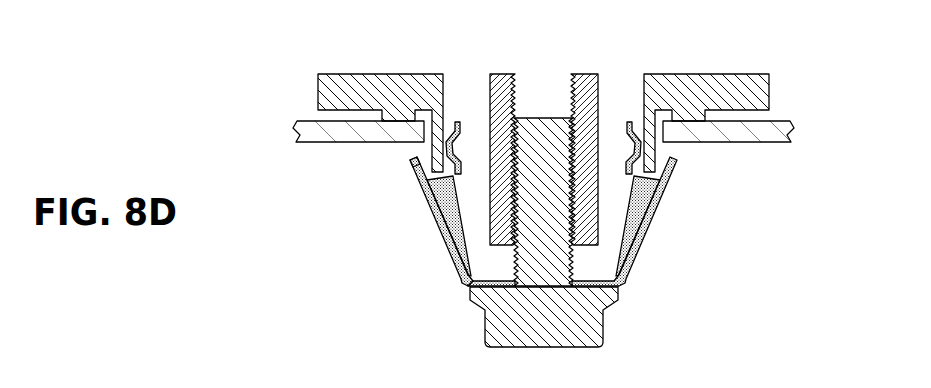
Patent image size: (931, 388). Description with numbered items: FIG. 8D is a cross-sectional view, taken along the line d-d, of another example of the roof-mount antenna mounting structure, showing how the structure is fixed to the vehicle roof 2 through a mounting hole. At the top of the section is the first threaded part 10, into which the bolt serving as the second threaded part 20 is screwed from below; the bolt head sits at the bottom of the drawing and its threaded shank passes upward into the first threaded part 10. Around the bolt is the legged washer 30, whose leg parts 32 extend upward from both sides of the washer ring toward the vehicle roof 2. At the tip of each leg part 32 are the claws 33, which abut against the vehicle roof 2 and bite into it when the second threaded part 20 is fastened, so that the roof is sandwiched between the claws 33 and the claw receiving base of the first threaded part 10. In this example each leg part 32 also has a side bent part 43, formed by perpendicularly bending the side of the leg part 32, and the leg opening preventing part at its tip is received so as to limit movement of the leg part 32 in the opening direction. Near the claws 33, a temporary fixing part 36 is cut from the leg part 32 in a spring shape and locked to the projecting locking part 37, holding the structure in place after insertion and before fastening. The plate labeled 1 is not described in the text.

The first plate member 1 is at (769, 82).
The vehicle roof 2 is at (771, 137).
The first threaded part 10 is at (578, 73).
The second threaded part 20 is at (600, 330).
The legged washer 30 is at (646, 279).
The leg part 32 is at (448, 251).
The claws 33 is at (411, 165).
The temporary fixing part 36 is at (633, 170).
The projecting locking part 37 is at (458, 165).
The side bent part 43 is at (643, 233).